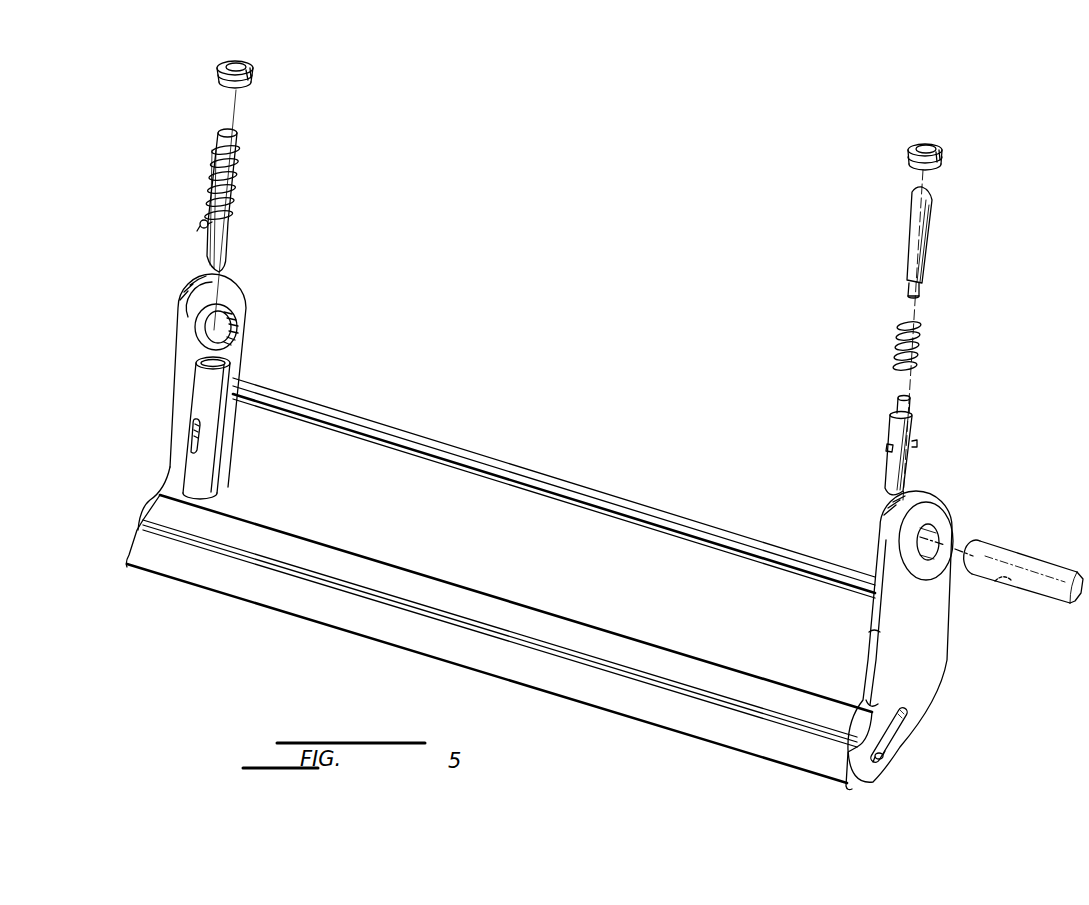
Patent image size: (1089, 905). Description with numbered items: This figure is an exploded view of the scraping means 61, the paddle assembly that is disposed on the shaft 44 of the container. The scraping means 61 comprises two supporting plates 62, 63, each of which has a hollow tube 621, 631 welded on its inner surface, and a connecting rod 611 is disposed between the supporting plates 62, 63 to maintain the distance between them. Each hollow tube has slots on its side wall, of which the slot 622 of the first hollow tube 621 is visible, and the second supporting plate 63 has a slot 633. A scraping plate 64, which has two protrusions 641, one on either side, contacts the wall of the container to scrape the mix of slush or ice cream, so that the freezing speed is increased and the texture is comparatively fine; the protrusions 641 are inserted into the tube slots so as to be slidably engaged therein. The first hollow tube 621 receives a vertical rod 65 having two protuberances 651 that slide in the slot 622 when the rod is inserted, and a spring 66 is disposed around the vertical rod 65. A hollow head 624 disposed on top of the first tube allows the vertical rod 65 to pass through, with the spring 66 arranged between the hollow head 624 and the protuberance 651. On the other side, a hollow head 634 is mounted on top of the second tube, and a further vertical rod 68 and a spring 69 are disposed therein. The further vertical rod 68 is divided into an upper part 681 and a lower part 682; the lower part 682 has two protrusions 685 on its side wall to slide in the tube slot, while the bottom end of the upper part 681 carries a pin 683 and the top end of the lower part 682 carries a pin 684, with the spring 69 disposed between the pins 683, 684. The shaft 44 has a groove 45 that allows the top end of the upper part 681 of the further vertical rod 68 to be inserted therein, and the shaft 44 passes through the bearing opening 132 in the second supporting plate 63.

The scraping means 61 is at (478, 333).
The connecting rod 611 is at (587, 488).
The scraping plate 64 is at (503, 610).
The supporting plate 62 is at (186, 358).
The hollow tube 621 is at (197, 400).
The slot 622 is at (192, 437).
The vertical rod 65 is at (230, 240).
The spring 66 is at (238, 173).
The protuberance 651 is at (203, 222).
The hollow head 624 is at (238, 90).
The supporting plate 63 is at (938, 663).
The hollow tube 631 is at (867, 667).
The slot 633 is at (903, 723).
The protrusion 641 is at (880, 755).
The bearing hole 132 is at (943, 525).
The shaft 44 is at (1037, 567).
The groove 45 is at (1003, 575).
The hollow head 634 is at (908, 158).
The further vertical rod 68 is at (944, 218).
The upper part 681 is at (917, 247).
The pin 683 is at (908, 290).
The spring 69 is at (897, 350).
The pin 684 is at (897, 400).
The protrusion 685 is at (888, 448).
The lower part 682 is at (887, 463).